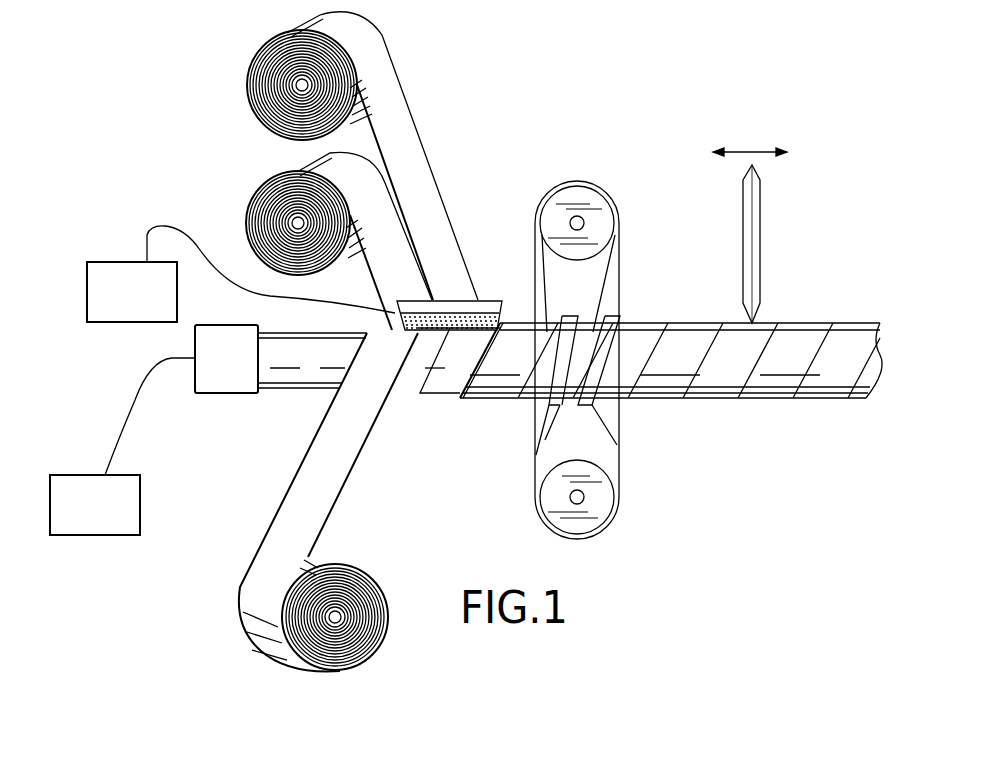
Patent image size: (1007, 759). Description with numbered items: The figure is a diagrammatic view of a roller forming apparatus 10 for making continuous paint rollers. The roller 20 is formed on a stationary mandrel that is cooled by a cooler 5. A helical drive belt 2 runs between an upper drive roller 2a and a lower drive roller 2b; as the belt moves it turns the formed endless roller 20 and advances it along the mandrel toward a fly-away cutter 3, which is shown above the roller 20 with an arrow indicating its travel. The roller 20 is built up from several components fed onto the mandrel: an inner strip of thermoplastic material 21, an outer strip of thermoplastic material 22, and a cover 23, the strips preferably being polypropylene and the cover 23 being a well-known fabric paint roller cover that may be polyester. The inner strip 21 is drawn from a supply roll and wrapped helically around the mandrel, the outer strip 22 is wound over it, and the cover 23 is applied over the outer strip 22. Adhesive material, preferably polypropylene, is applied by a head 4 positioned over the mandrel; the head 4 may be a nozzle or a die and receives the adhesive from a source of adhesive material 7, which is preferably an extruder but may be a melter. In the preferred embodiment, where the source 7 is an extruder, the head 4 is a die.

The roller forming apparatus 10 is at (545, 104).
The helical drive belt 2 is at (617, 428).
The drive roller 2a is at (607, 195).
The drive roller 2b is at (602, 512).
The fly-away cutter 3 is at (764, 203).
The head 4 is at (487, 305).
The cooler 5 is at (72, 518).
The source of adhesive material 7 is at (118, 272).
The roller 20 is at (804, 328).
The inner strip of thermoplastic material 21 is at (350, 452).
The outer strip of thermoplastic material 22 is at (398, 268).
The cover 23 is at (421, 168).